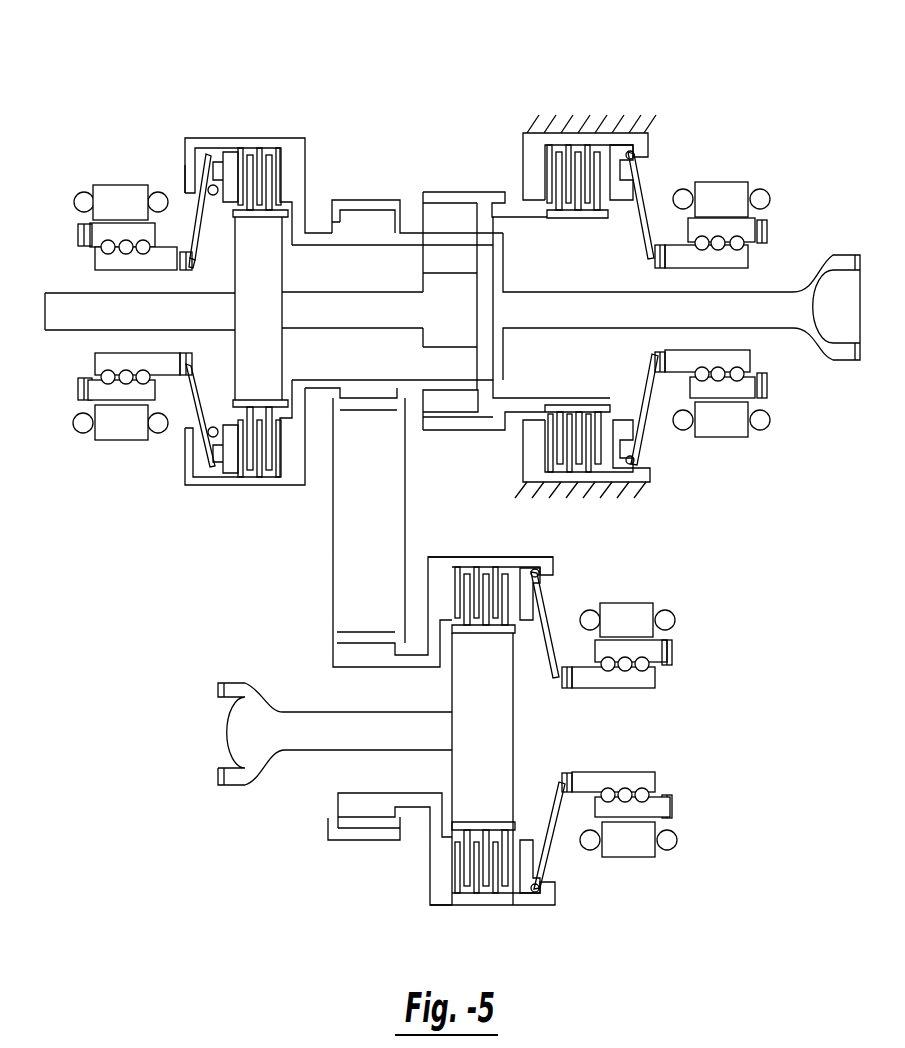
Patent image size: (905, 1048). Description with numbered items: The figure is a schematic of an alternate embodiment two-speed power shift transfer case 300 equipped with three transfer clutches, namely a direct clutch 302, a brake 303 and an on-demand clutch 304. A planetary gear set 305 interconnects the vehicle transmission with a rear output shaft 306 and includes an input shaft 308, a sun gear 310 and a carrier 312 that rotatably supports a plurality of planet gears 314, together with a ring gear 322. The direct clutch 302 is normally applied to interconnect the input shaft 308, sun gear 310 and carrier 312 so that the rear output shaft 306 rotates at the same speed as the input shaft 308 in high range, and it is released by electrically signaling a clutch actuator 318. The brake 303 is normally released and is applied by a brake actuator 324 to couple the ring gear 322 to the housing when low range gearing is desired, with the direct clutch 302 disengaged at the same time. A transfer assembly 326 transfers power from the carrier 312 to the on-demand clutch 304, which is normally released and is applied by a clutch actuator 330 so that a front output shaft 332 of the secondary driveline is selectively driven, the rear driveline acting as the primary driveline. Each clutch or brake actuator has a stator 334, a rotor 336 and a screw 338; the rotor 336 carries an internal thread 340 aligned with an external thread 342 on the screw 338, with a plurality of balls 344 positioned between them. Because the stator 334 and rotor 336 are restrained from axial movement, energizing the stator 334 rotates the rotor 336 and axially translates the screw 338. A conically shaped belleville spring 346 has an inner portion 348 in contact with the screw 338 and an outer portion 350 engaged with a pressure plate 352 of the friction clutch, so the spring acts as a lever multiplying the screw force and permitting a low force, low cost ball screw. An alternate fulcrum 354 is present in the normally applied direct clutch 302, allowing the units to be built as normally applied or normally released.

The two-speed power shift transfer case 300 is at (655, 50).
The direct clutch 302 is at (288, 120).
The brake 303 is at (662, 103).
The on-demand clutch 304 is at (494, 912).
The planetary gear set 305 is at (481, 181).
The rear output shaft 306 is at (765, 295).
The input shaft 308 is at (65, 303).
The sun gear 310 is at (432, 288).
The carrier 312 is at (410, 240).
The planet gears 314 is at (443, 213).
The clutch actuator 318 is at (66, 161).
The ring gear 322 is at (483, 423).
The brake actuator 324 is at (754, 451).
The transfer assembly 326 is at (315, 541).
The clutch actuator 330 is at (632, 869).
The front output shaft 332 is at (313, 737).
The stator 334 is at (117, 433).
The rotor 336 is at (85, 390).
The screw 338 is at (97, 365).
The internal thread 340 is at (97, 250).
The external thread 342 is at (164, 254).
The balls 344 is at (126, 254).
The belleville spring 346 is at (192, 218).
The inner portion 348 is at (197, 263).
The outer portion 350 is at (207, 156).
The pressure plate 352 is at (232, 152).
The alternate fulcrum 354 is at (188, 175).